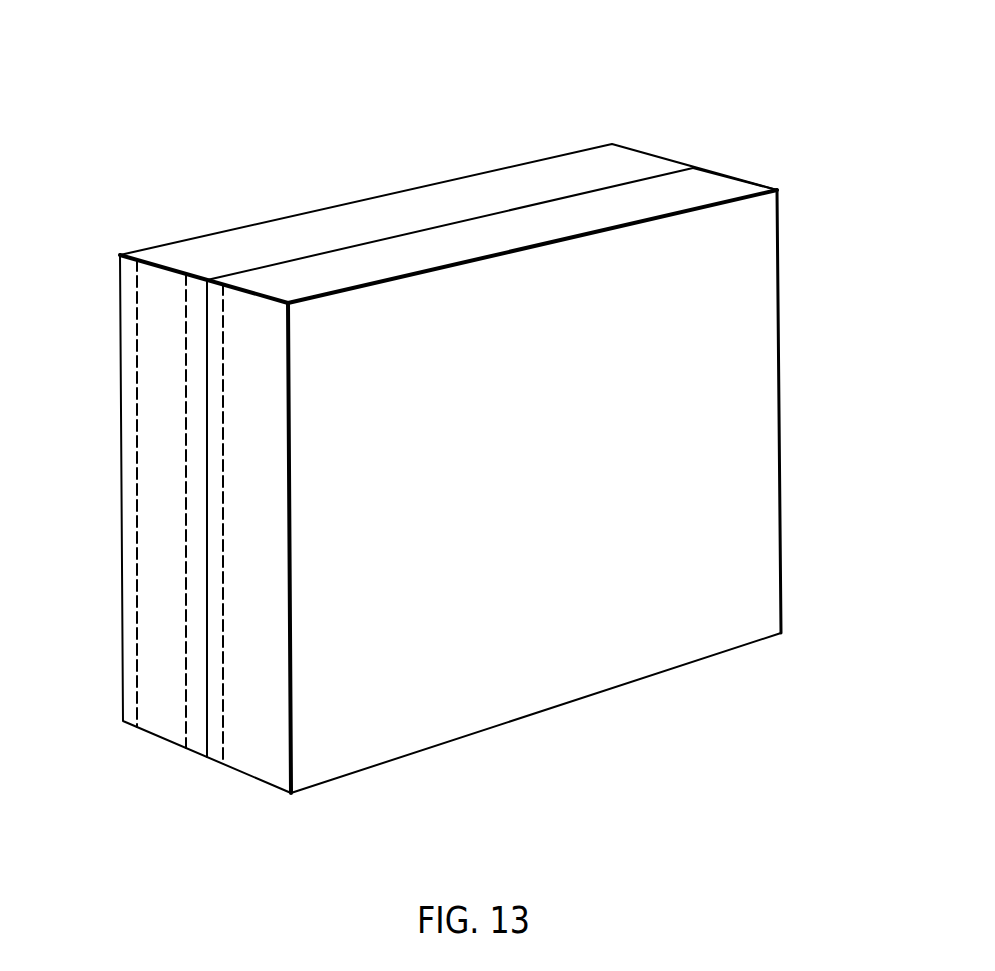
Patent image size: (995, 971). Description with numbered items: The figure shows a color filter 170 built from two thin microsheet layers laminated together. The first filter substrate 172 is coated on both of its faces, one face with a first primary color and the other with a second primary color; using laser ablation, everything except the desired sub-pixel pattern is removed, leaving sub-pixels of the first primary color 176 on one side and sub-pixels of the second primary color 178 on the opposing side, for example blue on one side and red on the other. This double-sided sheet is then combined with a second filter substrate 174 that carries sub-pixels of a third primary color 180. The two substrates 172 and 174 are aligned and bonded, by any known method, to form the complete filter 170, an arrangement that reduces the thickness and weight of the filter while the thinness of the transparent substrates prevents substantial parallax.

The filter 170 is at (615, 88).
The first filter substrate 172 is at (285, 235).
The second filter substrate 174 is at (735, 187).
The first primary color sub-pixels 176 is at (137, 280).
The second primary color sub-pixels 178 is at (188, 705).
The third primary color sub-pixels 180 is at (227, 728).